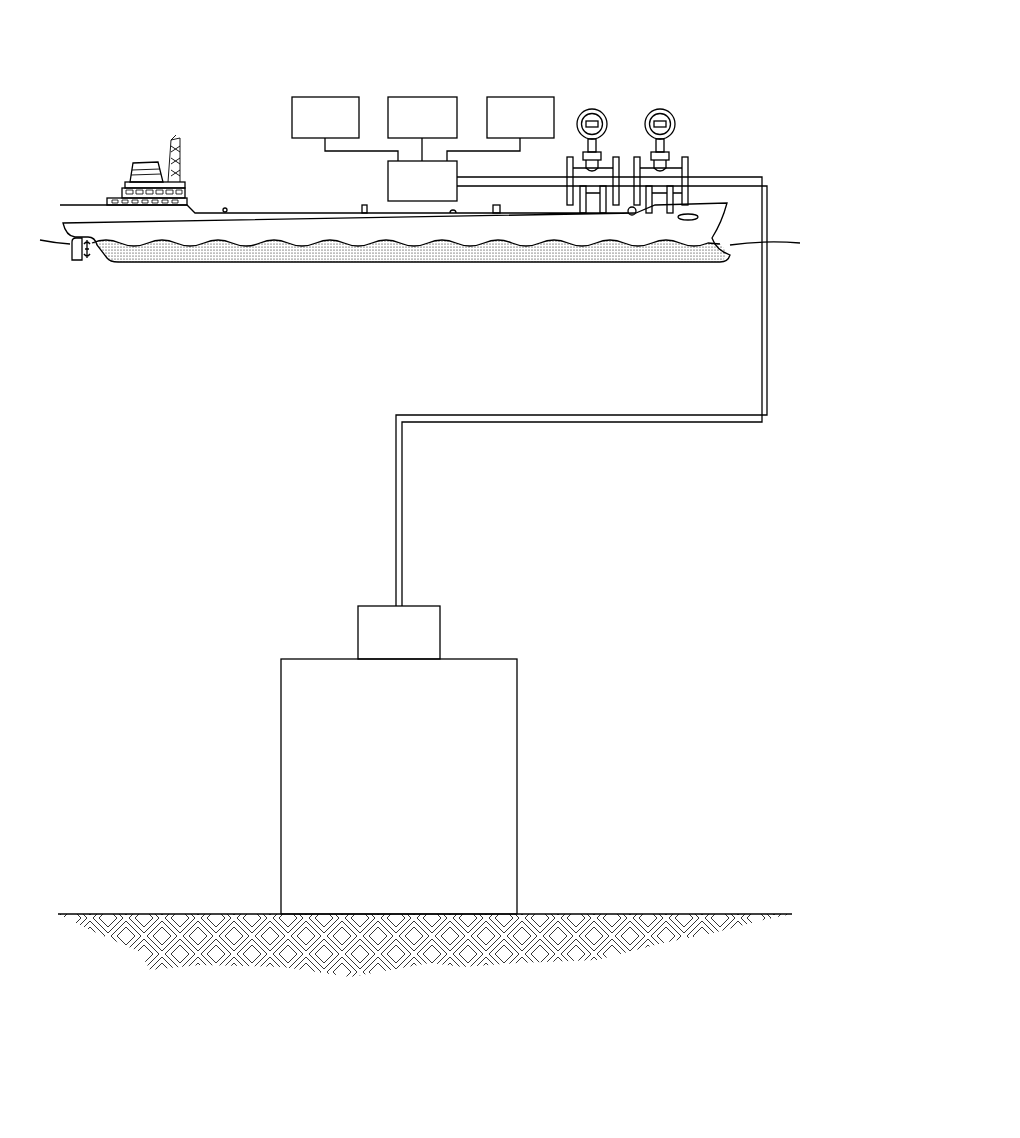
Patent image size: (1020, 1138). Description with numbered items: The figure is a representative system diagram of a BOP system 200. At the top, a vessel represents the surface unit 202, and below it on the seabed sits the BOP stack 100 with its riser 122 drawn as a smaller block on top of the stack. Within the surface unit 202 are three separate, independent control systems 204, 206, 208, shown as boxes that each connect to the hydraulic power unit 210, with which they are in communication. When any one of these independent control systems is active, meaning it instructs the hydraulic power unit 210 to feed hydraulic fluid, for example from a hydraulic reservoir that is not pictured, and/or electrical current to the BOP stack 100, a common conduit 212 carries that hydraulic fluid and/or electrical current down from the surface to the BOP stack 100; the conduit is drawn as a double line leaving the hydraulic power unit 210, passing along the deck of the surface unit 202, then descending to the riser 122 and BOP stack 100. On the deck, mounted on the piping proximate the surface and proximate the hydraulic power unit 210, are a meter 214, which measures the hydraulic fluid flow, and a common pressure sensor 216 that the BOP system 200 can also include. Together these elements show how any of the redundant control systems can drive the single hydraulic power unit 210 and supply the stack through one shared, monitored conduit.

The BOP system 200 is at (181, 58).
The surface unit 202 is at (545, 262).
The control system 204 is at (309, 131).
The control system 206 is at (406, 131).
The control system 208 is at (537, 131).
The hydraulic power unit 210 is at (406, 194).
The common conduit 212 is at (550, 422).
The meter 214 is at (591, 105).
The common pressure sensor 216 is at (659, 105).
The riser 122 is at (383, 645).
The BOP stack 100 is at (383, 799).